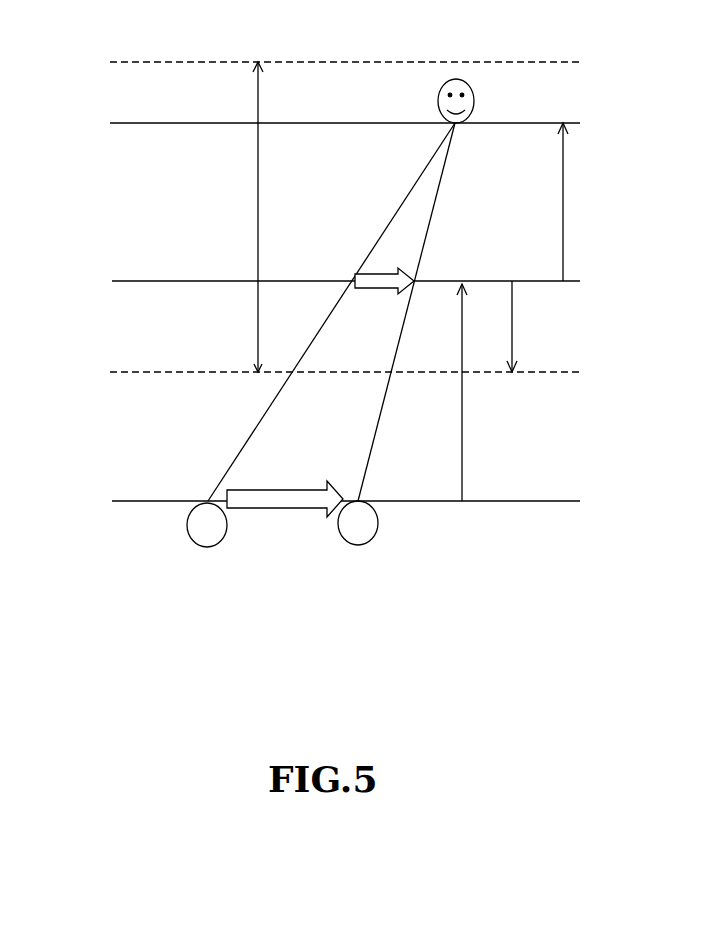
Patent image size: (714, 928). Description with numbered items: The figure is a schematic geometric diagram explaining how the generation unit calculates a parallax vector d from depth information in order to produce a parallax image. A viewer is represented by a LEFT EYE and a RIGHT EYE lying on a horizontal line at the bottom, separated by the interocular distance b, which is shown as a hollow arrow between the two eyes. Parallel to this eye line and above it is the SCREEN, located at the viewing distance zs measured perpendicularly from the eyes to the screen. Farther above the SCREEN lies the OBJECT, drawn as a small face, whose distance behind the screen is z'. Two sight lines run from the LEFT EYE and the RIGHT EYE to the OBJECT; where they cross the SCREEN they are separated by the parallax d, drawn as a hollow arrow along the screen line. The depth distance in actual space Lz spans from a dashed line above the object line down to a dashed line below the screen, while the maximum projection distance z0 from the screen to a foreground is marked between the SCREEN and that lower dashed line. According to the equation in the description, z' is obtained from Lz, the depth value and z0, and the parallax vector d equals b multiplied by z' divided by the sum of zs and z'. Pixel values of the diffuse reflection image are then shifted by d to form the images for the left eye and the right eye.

The object OBJECT is at (474, 101).
The screen SCREEN is at (214, 281).
The left eye LEFT EYE is at (187, 528).
The right eye RIGHT EYE is at (378, 525).
The depth distance in actual space Lz is at (231, 217).
The object distance from screen z' is at (546, 202).
The maximum projection distance z0 is at (531, 326).
The distance to the screen zs is at (478, 392).
The parallax vector d is at (383, 303).
The distance between both eyes b is at (285, 521).